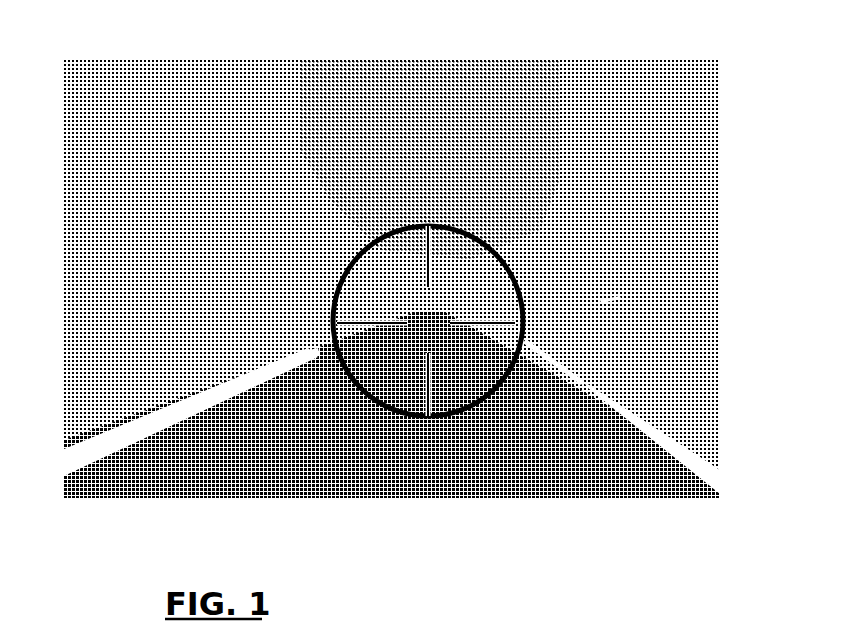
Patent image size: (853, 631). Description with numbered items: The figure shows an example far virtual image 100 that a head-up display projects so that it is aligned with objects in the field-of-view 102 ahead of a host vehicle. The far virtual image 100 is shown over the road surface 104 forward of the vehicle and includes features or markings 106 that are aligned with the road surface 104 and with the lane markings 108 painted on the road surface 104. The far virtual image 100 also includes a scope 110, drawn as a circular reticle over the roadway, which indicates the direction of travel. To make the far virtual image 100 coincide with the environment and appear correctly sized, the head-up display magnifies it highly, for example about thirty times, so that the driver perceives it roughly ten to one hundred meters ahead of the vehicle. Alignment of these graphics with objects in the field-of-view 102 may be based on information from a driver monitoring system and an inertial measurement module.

The far virtual image 100 is at (310, 339).
The field-of-view 102 is at (553, 47).
The road surface 104 is at (713, 407).
The features (markings) 106 is at (283, 382).
The lane markings 108 is at (148, 401).
The scope 110 is at (412, 225).